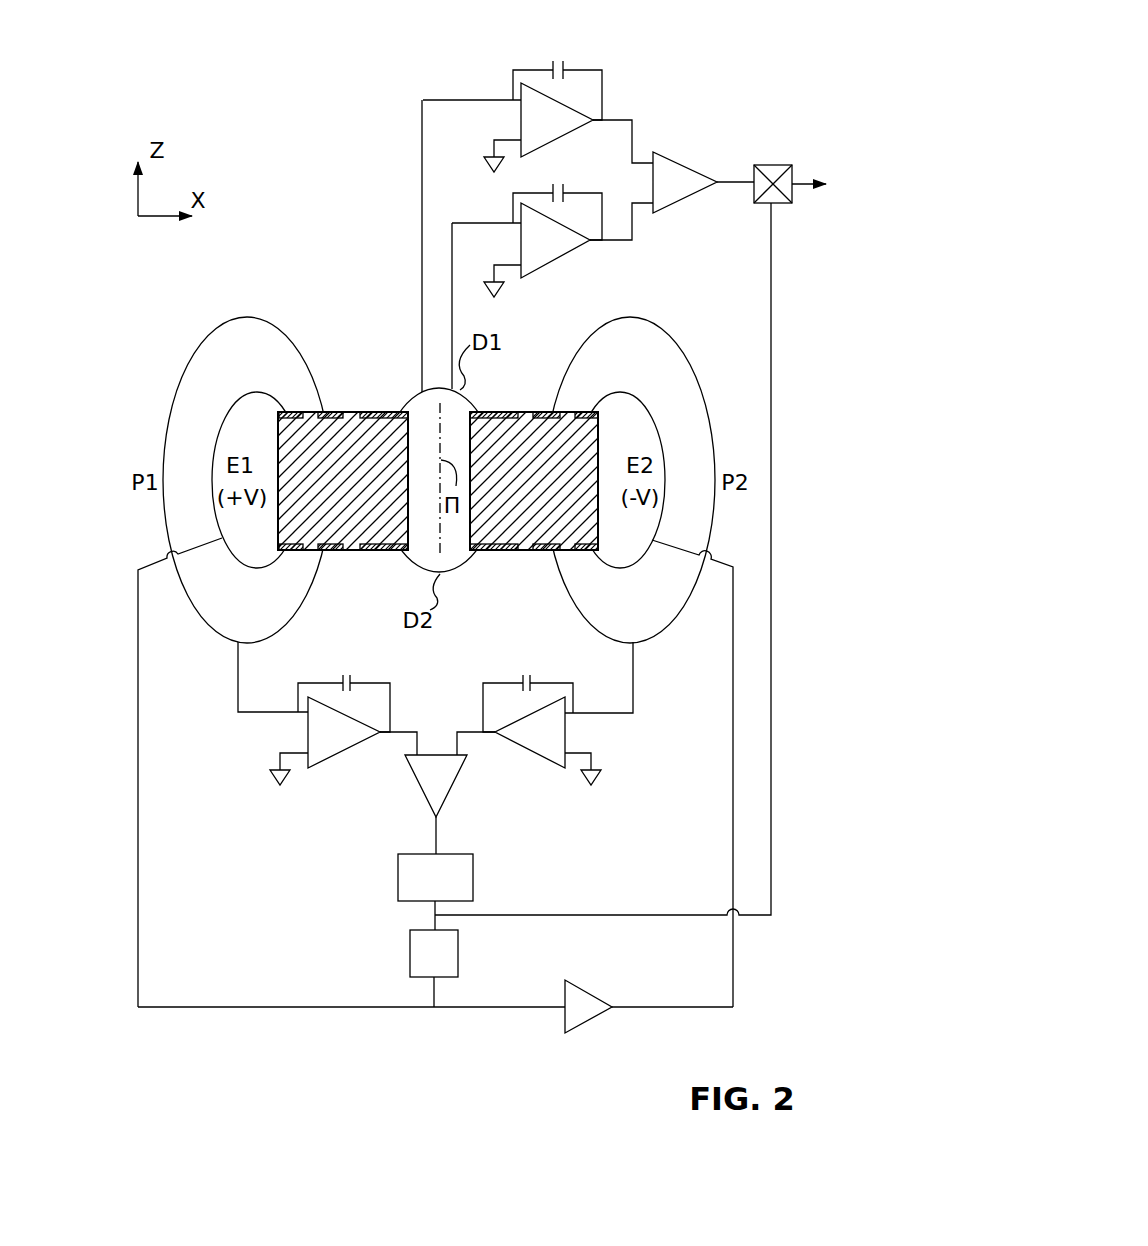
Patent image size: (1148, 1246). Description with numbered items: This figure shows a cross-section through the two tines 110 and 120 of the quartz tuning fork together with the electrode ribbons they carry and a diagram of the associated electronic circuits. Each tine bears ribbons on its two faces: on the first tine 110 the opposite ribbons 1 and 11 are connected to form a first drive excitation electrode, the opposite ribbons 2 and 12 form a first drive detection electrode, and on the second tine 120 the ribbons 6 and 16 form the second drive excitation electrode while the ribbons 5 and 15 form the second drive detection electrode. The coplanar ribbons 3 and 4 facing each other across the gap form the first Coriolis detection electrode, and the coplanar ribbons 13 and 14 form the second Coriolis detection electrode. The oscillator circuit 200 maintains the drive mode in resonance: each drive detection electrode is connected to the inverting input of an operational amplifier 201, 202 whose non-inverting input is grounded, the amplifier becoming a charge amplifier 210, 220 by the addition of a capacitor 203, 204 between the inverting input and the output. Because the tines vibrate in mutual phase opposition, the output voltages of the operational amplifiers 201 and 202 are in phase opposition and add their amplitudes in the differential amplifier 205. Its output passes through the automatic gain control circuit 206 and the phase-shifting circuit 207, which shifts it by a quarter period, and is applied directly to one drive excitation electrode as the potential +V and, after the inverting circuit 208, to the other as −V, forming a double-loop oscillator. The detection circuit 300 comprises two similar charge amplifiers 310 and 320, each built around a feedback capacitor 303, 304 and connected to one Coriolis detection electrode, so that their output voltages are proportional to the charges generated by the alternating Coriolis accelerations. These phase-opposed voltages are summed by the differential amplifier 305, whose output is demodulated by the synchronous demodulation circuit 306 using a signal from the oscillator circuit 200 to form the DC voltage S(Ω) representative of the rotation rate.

The ribbon 1 is at (287, 411).
The ribbon 2 is at (330, 411).
The ribbon 3 is at (375, 411).
The ribbon 4 is at (503, 411).
The ribbon 5 is at (548, 411).
The ribbon 6 is at (590, 411).
The ribbon 11 is at (290, 551).
The ribbon 12 is at (330, 551).
The ribbon 13 is at (378, 551).
The ribbon 14 is at (503, 551).
The ribbon 15 is at (548, 551).
The ribbon 16 is at (590, 551).
The tine 110 is at (181, 357).
The tine 120 is at (702, 357).
The oscillator circuit 200 is at (792, 748).
The operational amplifier 201 is at (328, 762).
The operational amplifier 202 is at (545, 762).
The capacitor 203 is at (340, 677).
The capacitor 204 is at (532, 677).
The differential amplifier 205 is at (455, 775).
The automatic gain control circuit 206 is at (398, 870).
The phase-shifting circuit 207 is at (410, 946).
The inverting circuit 208 is at (585, 990).
The charge amplifier 210 is at (288, 720).
The charge amplifier 220 is at (583, 720).
The detection circuit 300 is at (365, 152).
The capacitor 303 is at (565, 193).
The capacitor 304 is at (565, 70).
The differential amplifier 305 is at (686, 202).
The synchronous demodulation circuit 306 is at (775, 165).
The charge amplifier 310 is at (499, 214).
The charge amplifier 320 is at (499, 88).